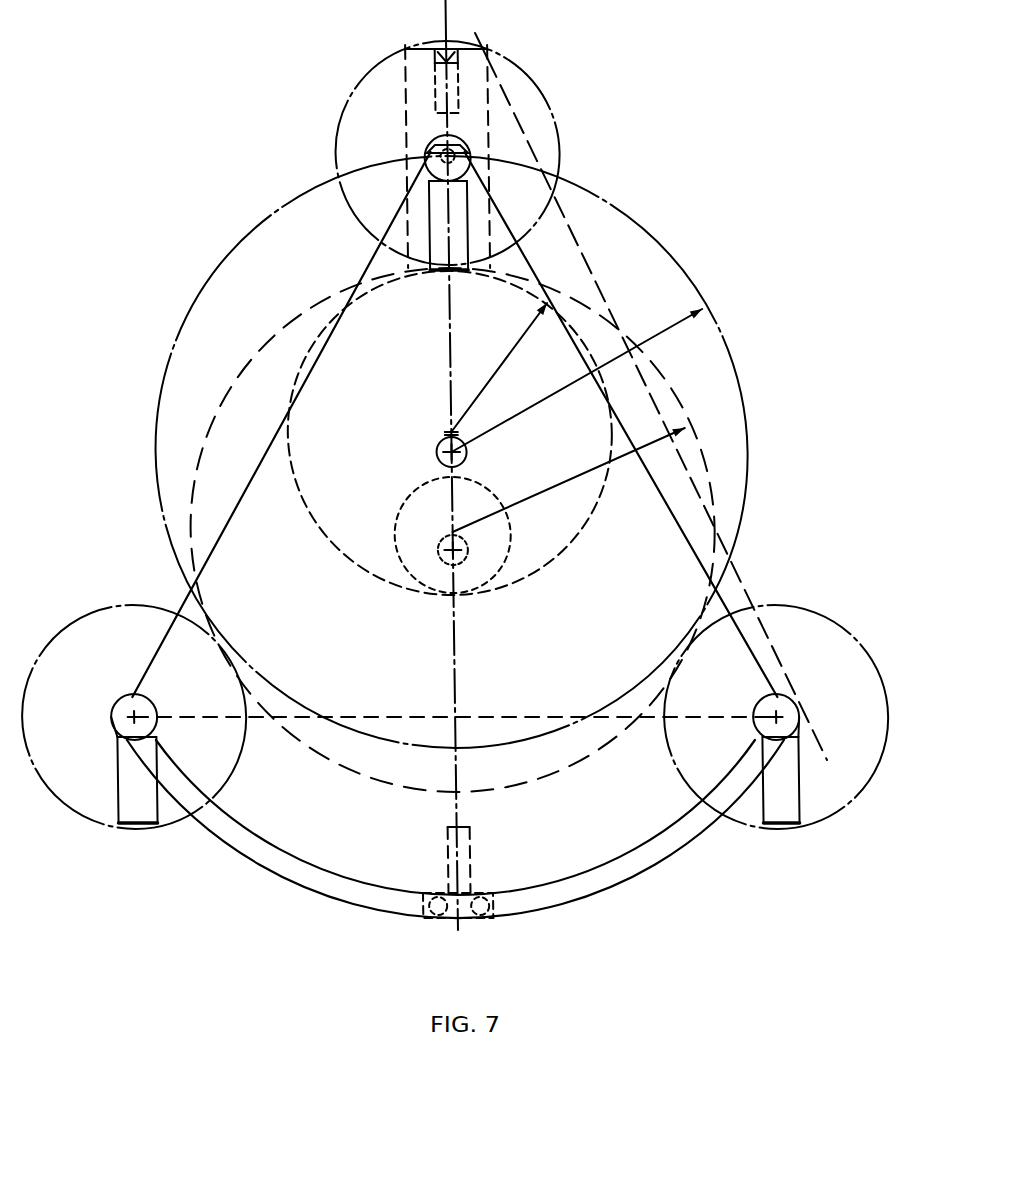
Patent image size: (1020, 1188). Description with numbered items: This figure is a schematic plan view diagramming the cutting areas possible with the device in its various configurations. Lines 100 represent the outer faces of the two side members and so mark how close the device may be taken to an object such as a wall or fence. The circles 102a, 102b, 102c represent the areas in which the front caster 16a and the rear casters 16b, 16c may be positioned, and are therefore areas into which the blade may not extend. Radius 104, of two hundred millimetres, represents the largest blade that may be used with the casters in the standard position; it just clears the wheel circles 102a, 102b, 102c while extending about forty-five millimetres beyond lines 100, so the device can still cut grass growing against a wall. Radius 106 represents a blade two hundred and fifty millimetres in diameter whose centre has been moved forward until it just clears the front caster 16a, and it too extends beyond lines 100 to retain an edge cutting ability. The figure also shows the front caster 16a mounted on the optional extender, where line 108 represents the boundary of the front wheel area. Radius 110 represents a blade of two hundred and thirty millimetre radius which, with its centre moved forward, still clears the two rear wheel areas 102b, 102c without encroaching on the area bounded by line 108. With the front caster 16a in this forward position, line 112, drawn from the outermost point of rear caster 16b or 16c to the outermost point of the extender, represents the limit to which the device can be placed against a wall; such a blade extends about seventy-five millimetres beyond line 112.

The front caster 16a is at (434, 222).
The rear caster 16b is at (136, 813).
The rear caster 16c is at (771, 815).
The lines 100 is at (218, 527).
The front wheel area circle 102a is at (488, 148).
The rear wheel area circle 102b is at (72, 813).
The rear wheel area circle 102c is at (839, 808).
The radius 104 is at (570, 483).
The radius 106 is at (506, 338).
The line 108 is at (410, 156).
The radius 110 is at (616, 340).
The line 112 is at (681, 479).